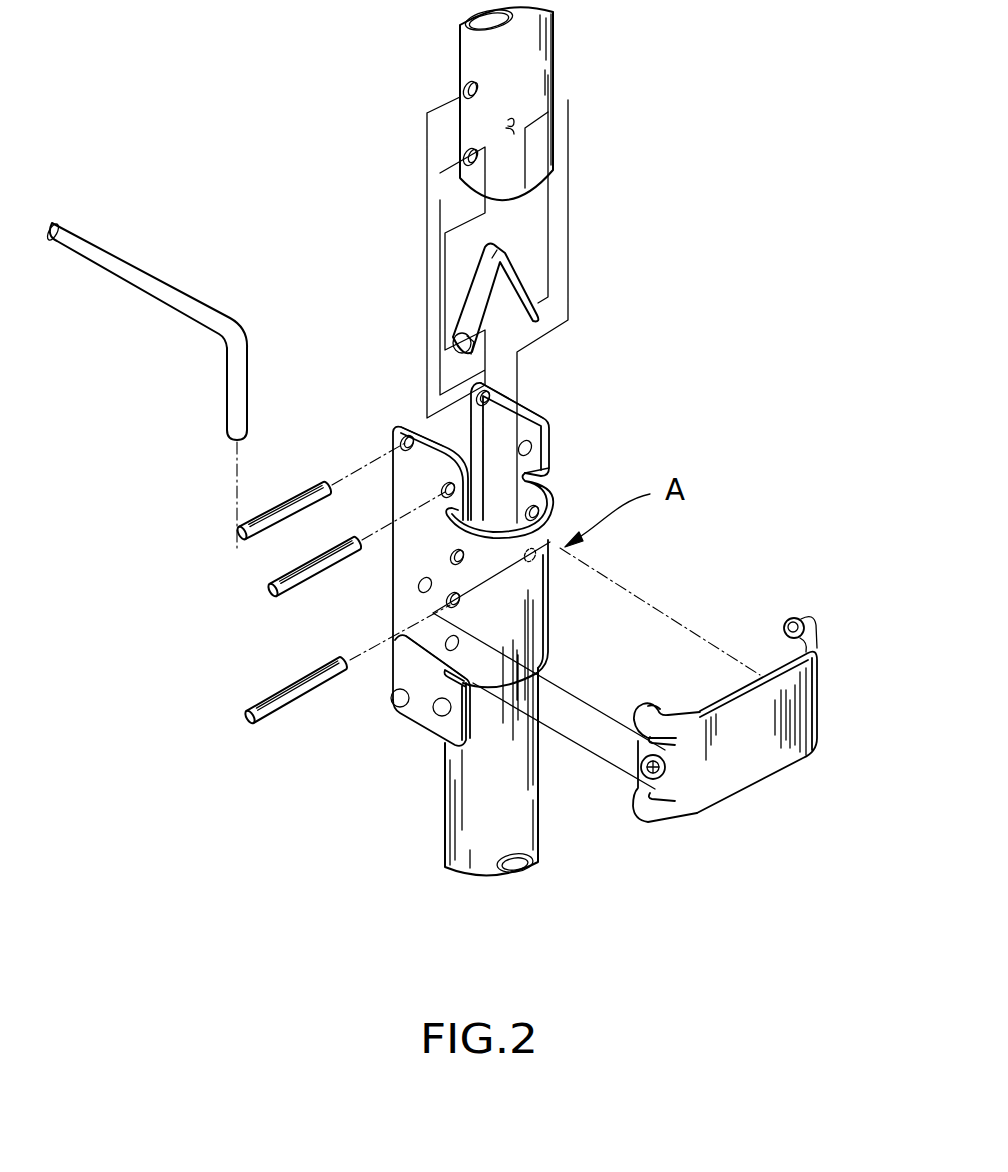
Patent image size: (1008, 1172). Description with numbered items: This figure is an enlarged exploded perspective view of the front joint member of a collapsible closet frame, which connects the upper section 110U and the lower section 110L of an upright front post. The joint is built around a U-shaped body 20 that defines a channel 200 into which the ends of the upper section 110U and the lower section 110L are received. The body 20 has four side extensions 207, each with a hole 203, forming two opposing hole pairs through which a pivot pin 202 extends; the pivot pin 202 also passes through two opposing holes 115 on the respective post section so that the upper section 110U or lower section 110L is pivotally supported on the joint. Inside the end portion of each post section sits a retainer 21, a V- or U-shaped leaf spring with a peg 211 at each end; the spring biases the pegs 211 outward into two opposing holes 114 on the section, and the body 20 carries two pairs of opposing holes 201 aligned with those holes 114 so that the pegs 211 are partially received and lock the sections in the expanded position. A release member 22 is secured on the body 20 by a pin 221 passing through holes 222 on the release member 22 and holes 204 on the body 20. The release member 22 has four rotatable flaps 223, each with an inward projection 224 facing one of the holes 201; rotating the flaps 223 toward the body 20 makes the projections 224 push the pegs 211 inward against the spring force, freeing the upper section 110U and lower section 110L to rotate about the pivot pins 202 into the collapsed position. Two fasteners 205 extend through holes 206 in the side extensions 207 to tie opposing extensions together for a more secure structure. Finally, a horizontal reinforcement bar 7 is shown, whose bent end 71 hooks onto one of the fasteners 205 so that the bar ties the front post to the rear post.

The horizontal reinforcement bar 7 is at (98, 262).
The bent end 71 is at (225, 358).
The U-shaped body 20 is at (530, 593).
The retainer 21 is at (515, 277).
The release member 22 is at (768, 745).
The upper section 110U is at (535, 64).
The lower section 110L is at (472, 822).
The holes 114 is at (466, 157).
The holes 115 is at (466, 92).
The channel 200 is at (430, 420).
The holes 201 is at (455, 558).
The pivot pin 202 is at (278, 578).
The hole 203 is at (445, 492).
The holes 204 is at (450, 603).
The fastener 205 is at (292, 508).
The holes 206 is at (395, 435).
The side extension 207 is at (440, 432).
The peg 211 is at (460, 343).
The pin 221 is at (285, 697).
The holes 222 is at (672, 770).
The flap 223 is at (810, 617).
The inward projection 224 is at (785, 626).